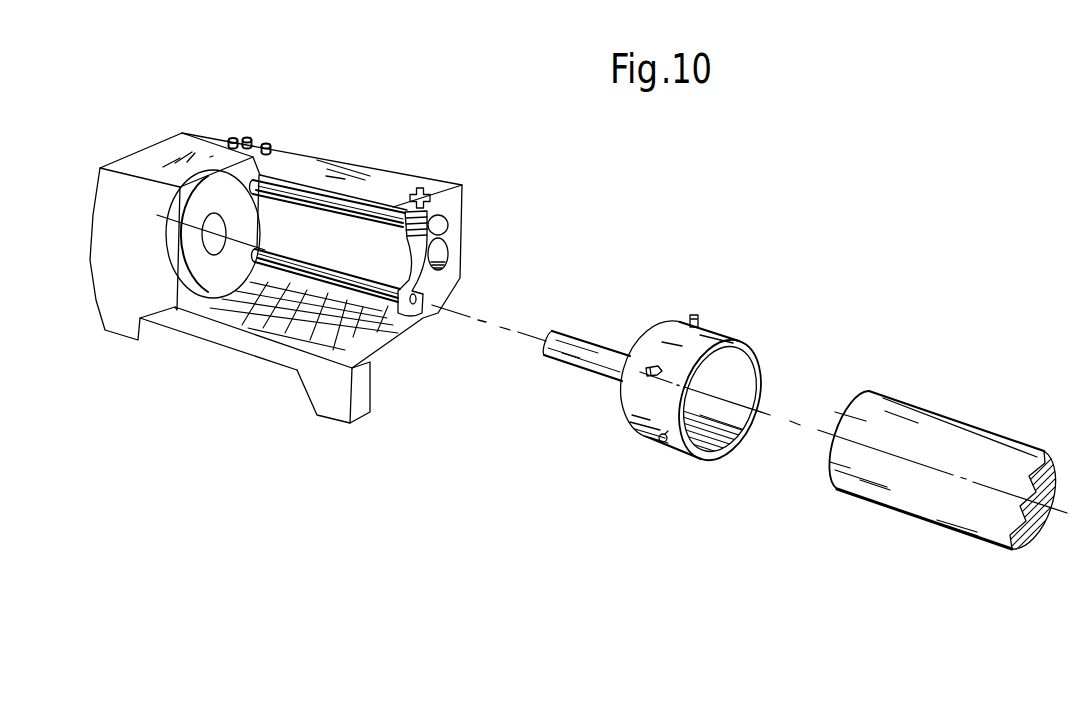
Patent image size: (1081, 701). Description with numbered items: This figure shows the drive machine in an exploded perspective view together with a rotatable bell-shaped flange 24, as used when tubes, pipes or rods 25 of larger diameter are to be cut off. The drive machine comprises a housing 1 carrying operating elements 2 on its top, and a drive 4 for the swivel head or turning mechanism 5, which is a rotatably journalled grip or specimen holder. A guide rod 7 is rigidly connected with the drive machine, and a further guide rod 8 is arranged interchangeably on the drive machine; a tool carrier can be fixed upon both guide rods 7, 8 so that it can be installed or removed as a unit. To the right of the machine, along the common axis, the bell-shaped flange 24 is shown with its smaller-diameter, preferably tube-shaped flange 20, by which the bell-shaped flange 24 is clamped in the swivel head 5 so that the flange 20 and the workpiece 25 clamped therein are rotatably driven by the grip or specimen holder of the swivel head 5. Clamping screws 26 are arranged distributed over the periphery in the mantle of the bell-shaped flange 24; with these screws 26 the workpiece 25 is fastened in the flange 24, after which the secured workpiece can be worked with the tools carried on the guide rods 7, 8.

The housing 1 is at (348, 168).
The operating elements 2 is at (266, 143).
The drive 4 is at (161, 150).
The swivel head 5 is at (196, 284).
The guide rod 7 is at (338, 277).
The further guide rod 8 is at (378, 215).
The tube-shaped flange 20 is at (563, 338).
The bell-shaped flange 24 is at (663, 332).
The workpiece 25 is at (947, 436).
The clamping screws 26 is at (700, 320).